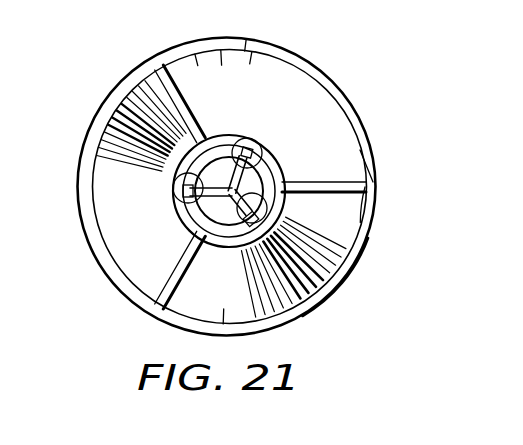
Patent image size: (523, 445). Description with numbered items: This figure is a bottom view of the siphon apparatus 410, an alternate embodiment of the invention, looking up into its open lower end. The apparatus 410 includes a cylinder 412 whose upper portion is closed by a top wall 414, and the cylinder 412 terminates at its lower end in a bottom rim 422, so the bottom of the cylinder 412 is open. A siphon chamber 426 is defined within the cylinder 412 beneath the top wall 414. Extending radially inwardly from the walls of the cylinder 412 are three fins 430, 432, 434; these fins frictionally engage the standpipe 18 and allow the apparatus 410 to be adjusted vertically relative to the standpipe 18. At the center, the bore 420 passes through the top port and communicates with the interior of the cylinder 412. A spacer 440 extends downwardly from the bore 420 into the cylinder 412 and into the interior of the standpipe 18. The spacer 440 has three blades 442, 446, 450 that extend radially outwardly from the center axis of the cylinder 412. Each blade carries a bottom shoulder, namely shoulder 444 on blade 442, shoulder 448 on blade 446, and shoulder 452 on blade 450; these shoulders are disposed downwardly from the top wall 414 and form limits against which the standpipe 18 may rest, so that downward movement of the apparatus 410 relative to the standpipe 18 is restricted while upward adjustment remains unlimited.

The siphon apparatus 410 is at (372, 112).
The cylinder 412 is at (369, 139).
The top wall 414 is at (318, 100).
The standpipe 18 is at (283, 160).
The bore 420 is at (286, 218).
The bottom rim 422 is at (336, 283).
The siphon chamber 426 is at (125, 129).
The fin 430 is at (347, 182).
The fin 432 is at (180, 95).
The fin 434 is at (170, 287).
The spacer 440 is at (186, 229).
The blade 442 is at (273, 251).
The shoulder 444 is at (238, 257).
The blade 446 is at (240, 135).
The shoulder 448 is at (268, 162).
The blade 450 is at (182, 188).
The shoulder 452 is at (186, 204).